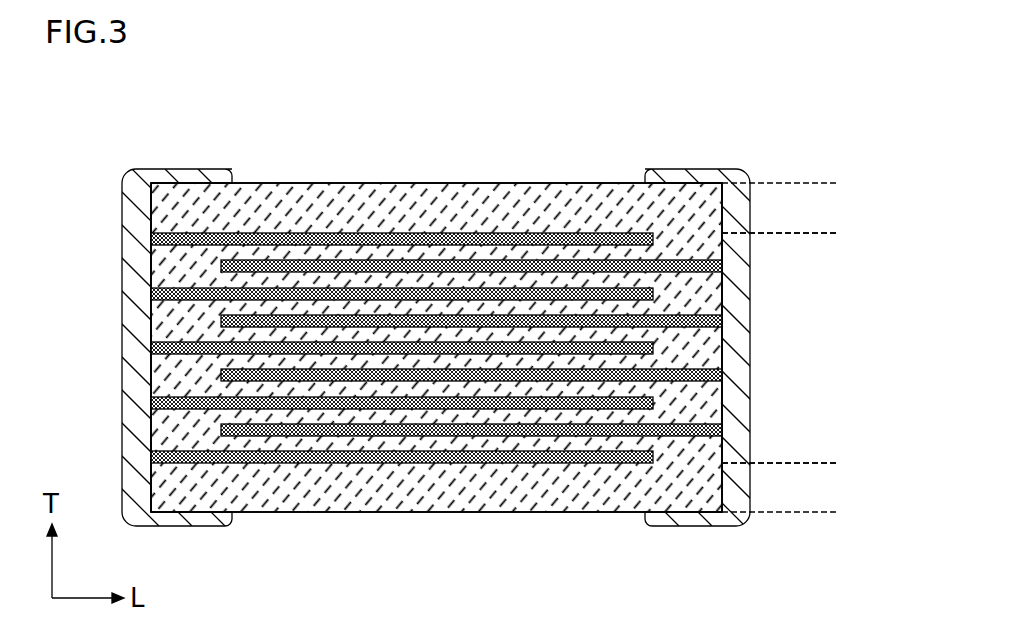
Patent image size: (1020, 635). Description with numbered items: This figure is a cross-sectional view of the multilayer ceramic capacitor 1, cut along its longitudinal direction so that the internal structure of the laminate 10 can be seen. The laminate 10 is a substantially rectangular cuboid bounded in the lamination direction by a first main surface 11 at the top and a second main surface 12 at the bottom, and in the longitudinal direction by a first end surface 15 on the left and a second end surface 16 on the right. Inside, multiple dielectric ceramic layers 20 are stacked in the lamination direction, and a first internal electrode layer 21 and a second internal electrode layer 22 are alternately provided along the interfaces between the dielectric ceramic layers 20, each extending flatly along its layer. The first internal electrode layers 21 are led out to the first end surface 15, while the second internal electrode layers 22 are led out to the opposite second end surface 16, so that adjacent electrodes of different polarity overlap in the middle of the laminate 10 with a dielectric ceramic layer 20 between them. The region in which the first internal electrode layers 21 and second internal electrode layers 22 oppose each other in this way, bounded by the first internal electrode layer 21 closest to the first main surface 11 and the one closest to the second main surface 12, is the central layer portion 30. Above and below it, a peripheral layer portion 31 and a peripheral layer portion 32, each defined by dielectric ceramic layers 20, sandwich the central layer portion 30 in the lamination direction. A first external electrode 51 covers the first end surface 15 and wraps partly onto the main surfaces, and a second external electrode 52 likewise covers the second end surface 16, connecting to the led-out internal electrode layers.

The multilayer ceramic capacitor 1 is at (100, 126).
The laminate 10 is at (555, 185).
The first main surface 11 is at (268, 184).
The second main surface 12 is at (597, 514).
The first end surface 15 is at (152, 376).
The second end surface 16 is at (722, 402).
The dielectric ceramic layers 20 is at (458, 384).
The first internal electrode layer 21 is at (377, 343).
The second internal electrode layer 22 is at (427, 317).
The central layer portion 30 is at (836, 234).
The peripheral layer portion 31 is at (836, 183).
The peripheral layer portion 32 is at (836, 464).
The first external electrode 51 is at (166, 177).
The second external electrode 52 is at (695, 177).